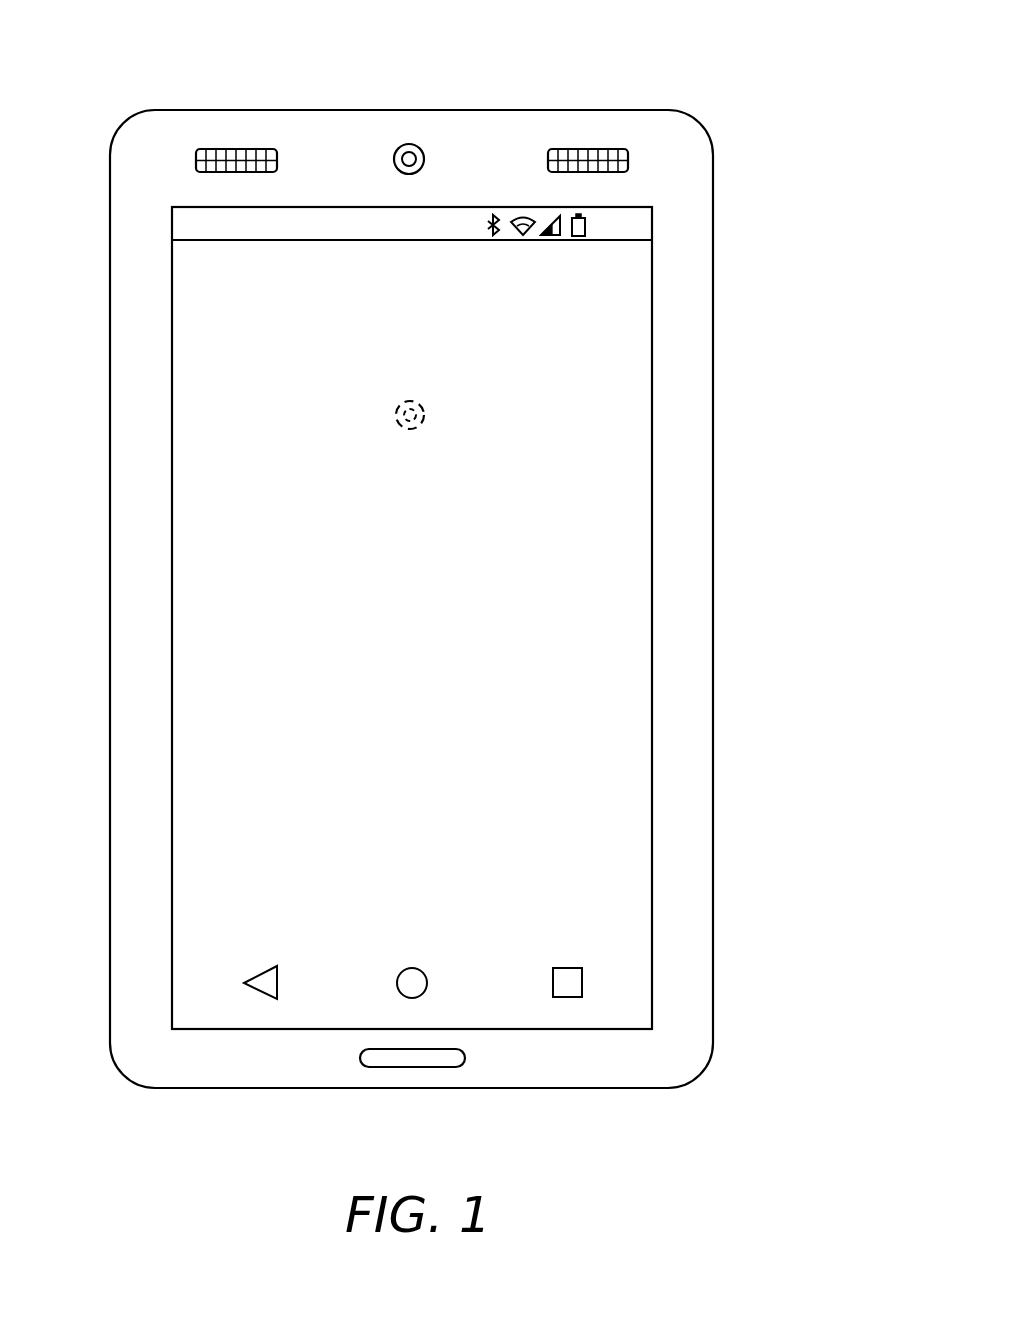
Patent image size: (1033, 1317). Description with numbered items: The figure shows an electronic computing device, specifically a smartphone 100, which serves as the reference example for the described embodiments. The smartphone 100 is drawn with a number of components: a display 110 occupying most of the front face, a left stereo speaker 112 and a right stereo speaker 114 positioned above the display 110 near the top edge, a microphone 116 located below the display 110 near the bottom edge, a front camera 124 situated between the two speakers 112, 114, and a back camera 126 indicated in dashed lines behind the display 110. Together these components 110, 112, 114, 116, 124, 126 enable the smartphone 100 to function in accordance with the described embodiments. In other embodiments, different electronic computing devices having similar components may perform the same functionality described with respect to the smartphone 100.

The smartphone 100 is at (748, 46).
The display 110 is at (603, 609).
The left stereo speaker 112 is at (234, 148).
The right stereo speaker 114 is at (590, 148).
The microphone 116 is at (407, 1068).
The front camera 124 is at (409, 143).
The back camera 126 is at (395, 414).